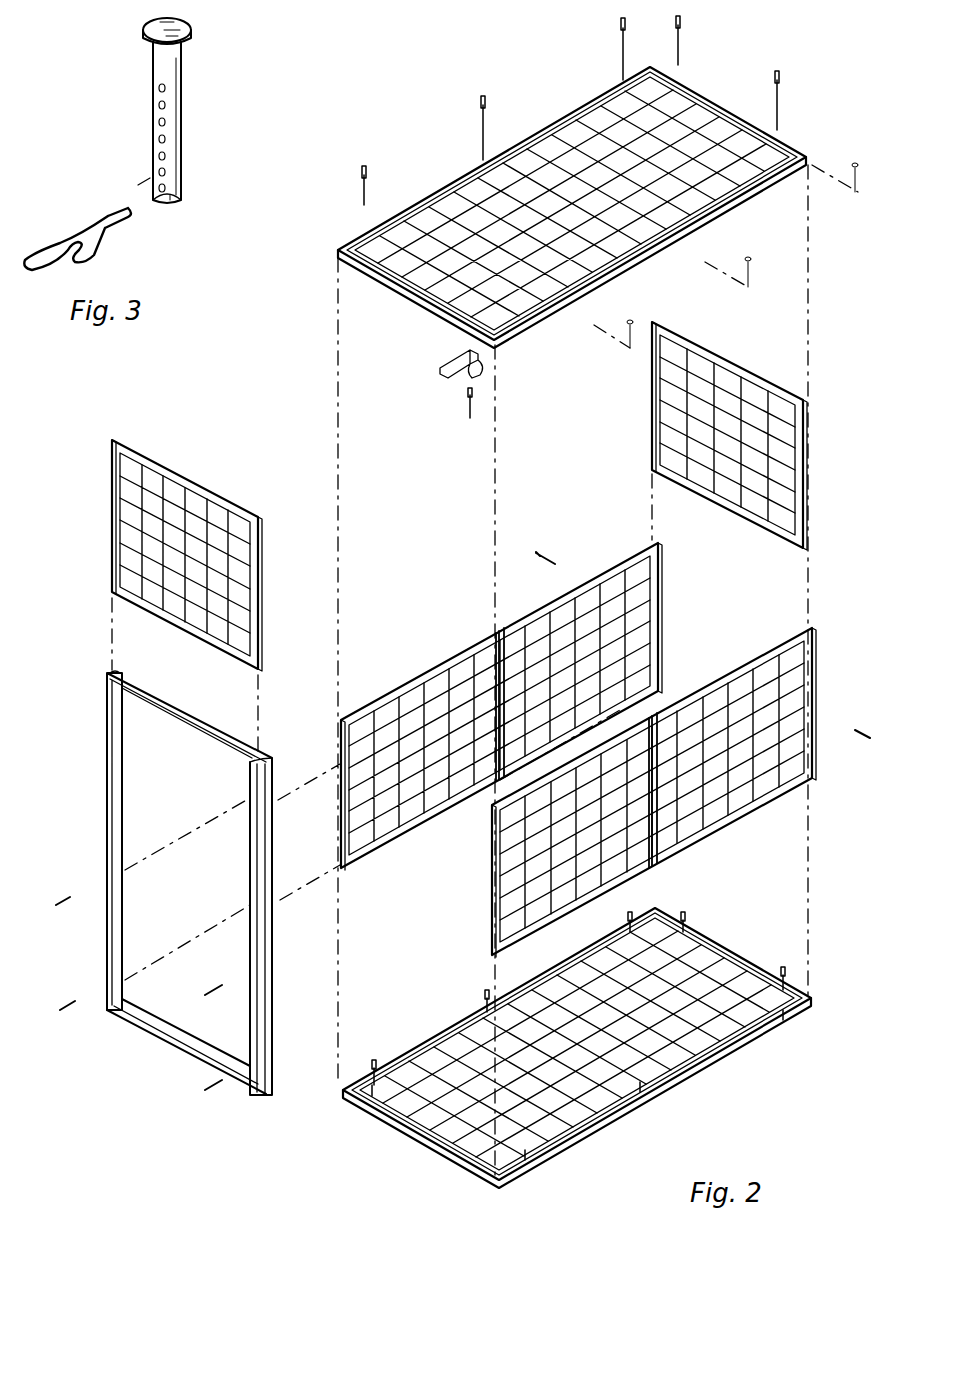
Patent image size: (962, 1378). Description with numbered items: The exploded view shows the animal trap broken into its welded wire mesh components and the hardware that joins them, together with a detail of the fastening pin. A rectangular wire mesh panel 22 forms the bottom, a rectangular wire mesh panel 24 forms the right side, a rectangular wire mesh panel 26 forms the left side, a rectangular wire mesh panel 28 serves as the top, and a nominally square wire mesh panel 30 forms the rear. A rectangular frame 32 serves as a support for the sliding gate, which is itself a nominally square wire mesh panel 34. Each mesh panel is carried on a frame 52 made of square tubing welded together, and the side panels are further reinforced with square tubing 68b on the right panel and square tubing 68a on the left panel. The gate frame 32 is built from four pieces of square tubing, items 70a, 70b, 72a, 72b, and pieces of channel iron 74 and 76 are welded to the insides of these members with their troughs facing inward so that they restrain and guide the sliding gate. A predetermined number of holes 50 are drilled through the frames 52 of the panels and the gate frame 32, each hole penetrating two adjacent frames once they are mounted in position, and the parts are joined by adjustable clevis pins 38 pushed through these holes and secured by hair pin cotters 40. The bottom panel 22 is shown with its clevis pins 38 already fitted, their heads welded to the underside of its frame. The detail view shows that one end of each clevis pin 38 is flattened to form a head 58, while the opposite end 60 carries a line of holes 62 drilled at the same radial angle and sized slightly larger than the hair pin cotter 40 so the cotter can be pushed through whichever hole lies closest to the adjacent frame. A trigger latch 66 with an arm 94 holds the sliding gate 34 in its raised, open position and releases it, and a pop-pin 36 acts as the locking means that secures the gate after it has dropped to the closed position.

In FIG. 2, the rectangular wire mesh panel 22 is at (731, 1067).
In FIG. 2, the rectangular wire mesh panel 24 is at (825, 680).
In FIG. 2, the rectangular wire mesh panel 26 is at (674, 603).
In FIG. 2, the rectangular wire mesh panel 28 is at (420, 185).
In FIG. 2, the square wire mesh panel 30 is at (725, 348).
In FIG. 2, the rectangular frame 32 is at (95, 855).
In FIG. 2, the square wire mesh panel 34 is at (98, 515).
In FIG. 2, the pop-pin 36 is at (518, 320).
In FIG. 3, the adjustable clevis pin 38 is at (193, 92).
In FIG. 2, the adjustable clevis pin 38 is at (790, 975).
In FIG. 3, the hair pin cotter 40 is at (56, 219).
In FIG. 2, the holes 50 is at (778, 395).
In FIG. 2, the frames 52 is at (338, 246).
In FIG. 3, the head 58 is at (192, 27).
In FIG. 3, the end opposite head 60 is at (170, 205).
In FIG. 2, the end opposite head 60 is at (540, 1176).
In FIG. 3, the holes 62 is at (157, 112).
In FIG. 2, the trigger latch 66 is at (464, 372).
In FIG. 2, the square tubing 68a is at (494, 655).
In FIG. 2, the square tubing 68b is at (660, 820).
In FIG. 2, the square tubing piece 70a is at (108, 720).
In FIG. 2, the square tubing piece 70b is at (272, 1068).
In FIG. 2, the square tubing piece 72a is at (112, 684).
In FIG. 2, the square tubing piece 72b is at (148, 1033).
In FIG. 2, the channel iron 74 is at (250, 790).
In FIG. 2, the channel iron 76 is at (190, 1052).
In FIG. 2, the arm 94 is at (440, 365).